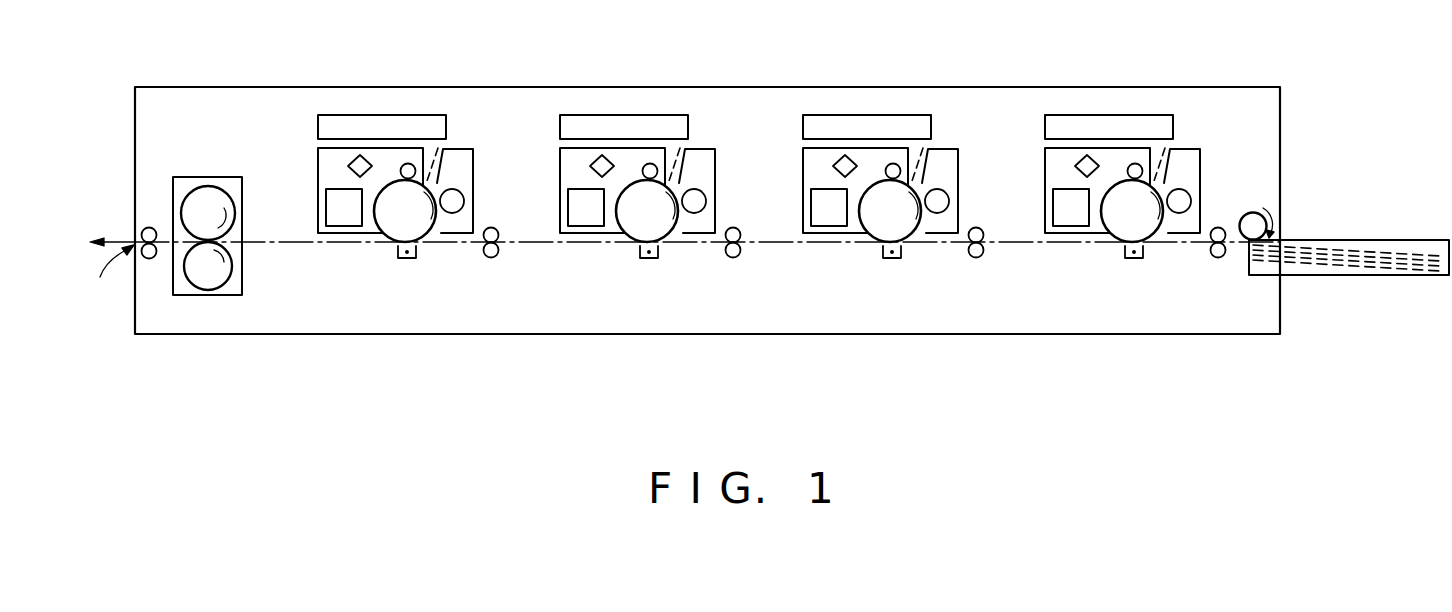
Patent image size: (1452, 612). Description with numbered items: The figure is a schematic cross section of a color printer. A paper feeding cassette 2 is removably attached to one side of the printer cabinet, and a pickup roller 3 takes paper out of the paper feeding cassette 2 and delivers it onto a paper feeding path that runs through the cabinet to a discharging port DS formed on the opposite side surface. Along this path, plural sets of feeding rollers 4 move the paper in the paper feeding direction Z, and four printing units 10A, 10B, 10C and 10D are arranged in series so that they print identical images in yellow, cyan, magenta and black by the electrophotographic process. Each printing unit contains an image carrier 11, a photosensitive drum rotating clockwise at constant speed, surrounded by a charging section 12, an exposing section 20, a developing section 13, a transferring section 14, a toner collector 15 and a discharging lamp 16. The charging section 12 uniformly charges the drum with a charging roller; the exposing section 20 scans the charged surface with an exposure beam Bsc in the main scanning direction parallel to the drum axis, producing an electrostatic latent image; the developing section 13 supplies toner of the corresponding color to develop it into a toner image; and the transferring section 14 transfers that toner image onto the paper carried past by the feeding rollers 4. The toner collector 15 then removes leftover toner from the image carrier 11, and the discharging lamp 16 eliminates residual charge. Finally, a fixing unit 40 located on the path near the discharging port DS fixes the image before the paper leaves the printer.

The printing unit 10A is at (1185, 127).
The printing unit 10B is at (942, 120).
The printing unit 10C is at (702, 127).
The printing unit 10D is at (462, 120).
The image carrier 11 is at (394, 229).
The charging section 12 is at (403, 168).
The developing section 13 is at (459, 197).
The transferring section 14 is at (407, 260).
The toner collector 15 is at (327, 209).
The discharging lamp 16 is at (348, 166).
The exposing section 20 is at (338, 126).
The paper feeding cassette 2 is at (1353, 252).
The pickup roller 3 is at (1250, 214).
The feeding rollers 4 is at (151, 259).
The fixing unit 40 is at (188, 187).
The exposure beam Bsc is at (441, 146).
The paper feeding direction Z is at (112, 227).
The discharging port DS is at (111, 274).